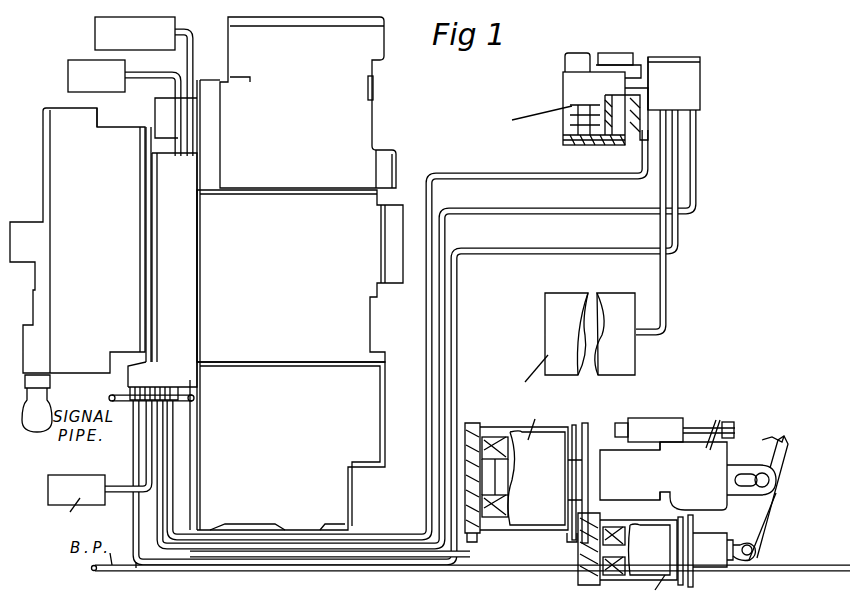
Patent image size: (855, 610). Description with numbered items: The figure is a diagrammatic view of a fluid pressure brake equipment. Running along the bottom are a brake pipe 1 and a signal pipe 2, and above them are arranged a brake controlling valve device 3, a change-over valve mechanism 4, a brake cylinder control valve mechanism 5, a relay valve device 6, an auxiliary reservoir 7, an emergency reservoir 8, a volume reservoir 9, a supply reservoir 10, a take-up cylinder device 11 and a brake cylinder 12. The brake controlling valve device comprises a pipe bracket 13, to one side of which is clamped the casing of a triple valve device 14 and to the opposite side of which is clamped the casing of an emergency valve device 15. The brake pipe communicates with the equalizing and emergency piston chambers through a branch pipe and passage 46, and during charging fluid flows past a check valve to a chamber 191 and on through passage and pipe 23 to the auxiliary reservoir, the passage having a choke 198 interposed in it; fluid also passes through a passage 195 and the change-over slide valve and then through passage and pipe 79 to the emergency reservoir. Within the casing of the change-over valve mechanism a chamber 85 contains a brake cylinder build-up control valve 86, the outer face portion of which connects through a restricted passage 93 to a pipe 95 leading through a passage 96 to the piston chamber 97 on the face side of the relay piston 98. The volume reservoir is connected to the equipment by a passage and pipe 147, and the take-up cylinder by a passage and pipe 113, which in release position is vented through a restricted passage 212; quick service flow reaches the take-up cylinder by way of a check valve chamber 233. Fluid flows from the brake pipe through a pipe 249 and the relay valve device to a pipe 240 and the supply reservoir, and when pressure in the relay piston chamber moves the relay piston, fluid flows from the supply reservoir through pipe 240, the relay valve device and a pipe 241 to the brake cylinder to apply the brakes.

The brake pipe 1 is at (205, 570).
The signal pipe 2 is at (118, 398).
The brake controlling valve device 3 is at (358, 325).
The change-over valve mechanism 4 is at (336, 497).
The brake cylinder control valve mechanism 5 is at (371, 44).
The relay valve device 6 is at (692, 83).
The auxiliary reservoir 7 is at (92, 21).
The emergency reservoir 8 is at (70, 65).
The volume reservoir 9 is at (52, 481).
The supply reservoir 10 is at (612, 306).
The take-up cylinder device 11 is at (660, 543).
The brake cylinder 12 is at (552, 517).
The pipe bracket 13 is at (165, 305).
The triple valve device 14 is at (212, 334).
The emergency valve device 15 is at (62, 182).
The passage and pipe 23 is at (190, 52).
The branch pipe and passage 46 is at (118, 442).
The passage and pipe 79 is at (146, 78).
The chamber 85 is at (571, 580).
The brake cylinder build-up control valve 86 is at (622, 575).
The restricted passage 93 is at (473, 609).
The pipe 95 is at (452, 173).
The passage 96 is at (632, 138).
The piston chamber 97 is at (572, 138).
The relay piston 98 is at (600, 138).
The passage and pipe 113 is at (366, 554).
The passage and pipe 147 is at (160, 456).
The chamber 191 is at (256, 609).
The passage 195 is at (360, 609).
The choke 198 is at (310, 609).
The restricted passage 212 is at (410, 597).
The check valve chamber 233 is at (499, 609).
The pipe 240 is at (666, 282).
The pipe 241 is at (478, 251).
The pipe 249 is at (445, 212).